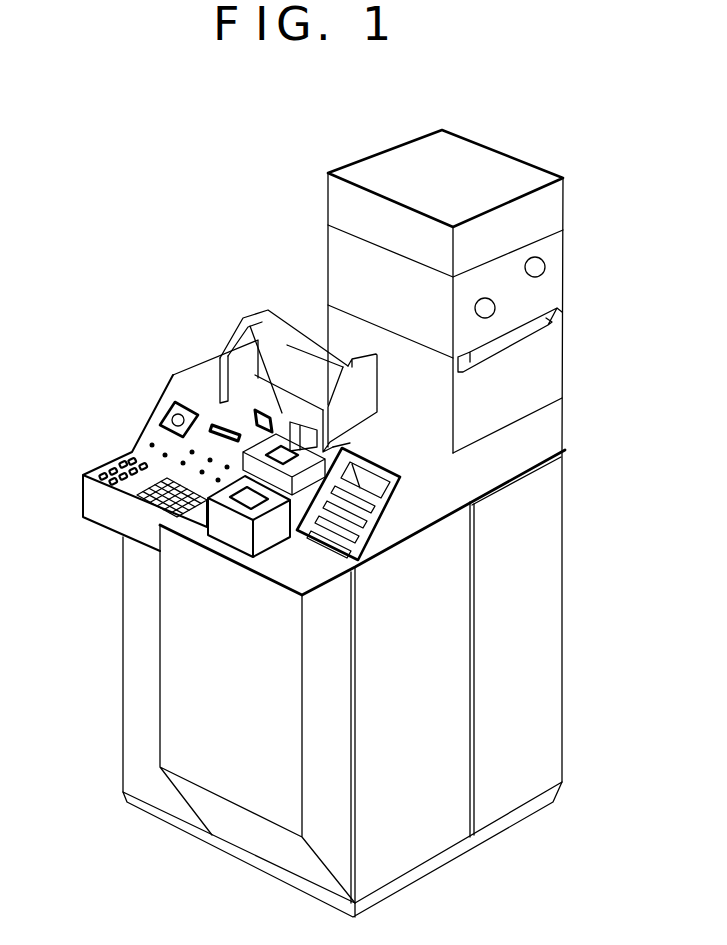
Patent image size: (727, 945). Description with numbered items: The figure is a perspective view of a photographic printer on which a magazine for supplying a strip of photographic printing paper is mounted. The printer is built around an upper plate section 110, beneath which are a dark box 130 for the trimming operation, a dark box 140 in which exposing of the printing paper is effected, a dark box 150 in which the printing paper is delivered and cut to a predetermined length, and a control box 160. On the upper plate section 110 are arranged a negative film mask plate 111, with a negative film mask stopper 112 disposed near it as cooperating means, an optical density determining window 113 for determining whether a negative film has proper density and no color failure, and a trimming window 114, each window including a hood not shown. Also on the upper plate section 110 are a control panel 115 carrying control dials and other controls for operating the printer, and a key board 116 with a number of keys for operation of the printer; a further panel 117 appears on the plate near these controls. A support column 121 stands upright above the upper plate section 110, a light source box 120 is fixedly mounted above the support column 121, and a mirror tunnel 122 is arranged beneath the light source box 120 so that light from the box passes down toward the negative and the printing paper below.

The upper plate section 110 is at (153, 428).
The negative film mask plate 111 is at (350, 443).
The negative film mask stopper 112 is at (302, 422).
The optical density determining window 113 is at (303, 473).
The trimming window 114 is at (243, 502).
The control panel 115 is at (167, 417).
The key board 116 is at (107, 468).
The coin slot panel 117 is at (380, 490).
The light source box 120 is at (274, 360).
The support column 121 is at (222, 374).
The mirror tunnel 122 is at (323, 380).
The dark box for trimming operation 130 is at (395, 850).
The dark box for exposing 140 is at (517, 613).
The dark box for delivering and cutting 150 is at (545, 372).
The control box 160 is at (137, 667).